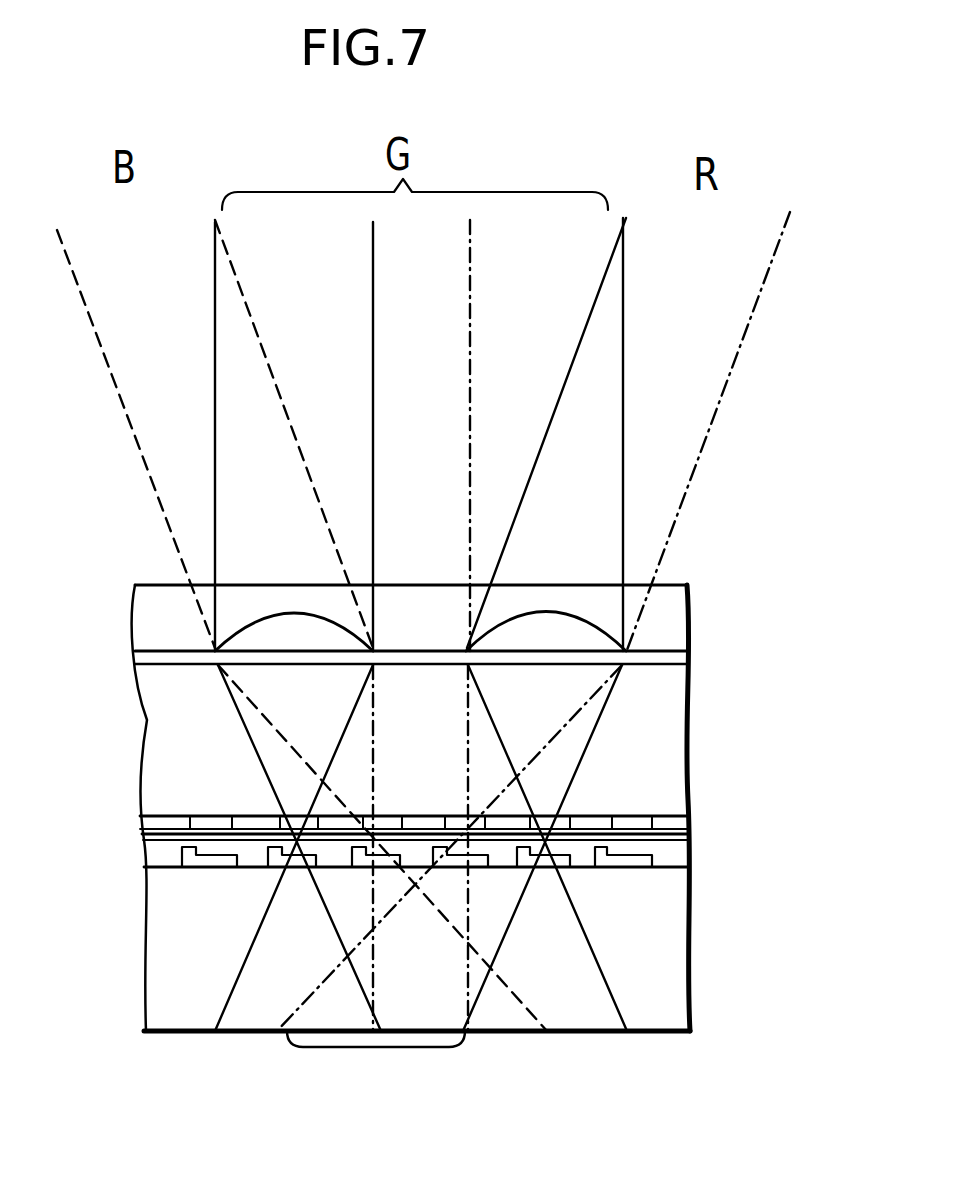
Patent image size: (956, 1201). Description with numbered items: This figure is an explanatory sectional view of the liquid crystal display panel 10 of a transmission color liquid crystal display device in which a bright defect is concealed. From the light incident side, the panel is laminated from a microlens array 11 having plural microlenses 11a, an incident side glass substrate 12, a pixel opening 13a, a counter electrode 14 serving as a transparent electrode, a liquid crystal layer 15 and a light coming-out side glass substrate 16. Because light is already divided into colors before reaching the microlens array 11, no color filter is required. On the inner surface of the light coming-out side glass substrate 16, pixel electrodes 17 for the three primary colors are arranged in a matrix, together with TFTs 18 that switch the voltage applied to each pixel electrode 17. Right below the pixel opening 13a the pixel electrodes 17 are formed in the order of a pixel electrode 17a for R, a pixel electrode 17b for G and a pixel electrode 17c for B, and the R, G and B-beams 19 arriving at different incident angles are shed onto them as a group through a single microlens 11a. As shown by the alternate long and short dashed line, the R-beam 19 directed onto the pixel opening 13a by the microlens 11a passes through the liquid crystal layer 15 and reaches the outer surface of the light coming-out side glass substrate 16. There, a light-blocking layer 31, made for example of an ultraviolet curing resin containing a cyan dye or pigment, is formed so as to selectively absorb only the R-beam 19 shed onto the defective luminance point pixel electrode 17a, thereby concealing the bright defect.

The liquid crystal display panel 10 is at (747, 648).
The microlens array 11 is at (145, 606).
The microlens 11a is at (573, 630).
The incident side glass substrate 12 is at (150, 707).
The pixel opening 13a is at (455, 822).
The counter electrode 14 is at (150, 835).
The liquid crystal layer 15 is at (157, 857).
The light coming-out side glass substrate 16 is at (150, 991).
The pixel electrodes 17 is at (223, 868).
The pixel electrode corresponding to R 17a is at (457, 870).
The pixel electrode corresponding to G 17b is at (545, 870).
The pixel electrode corresponding to B 17c is at (625, 870).
The TFT 18 is at (190, 868).
The R, G and B-beams 19 is at (787, 233).
The light-blocking layer 31 is at (384, 1040).